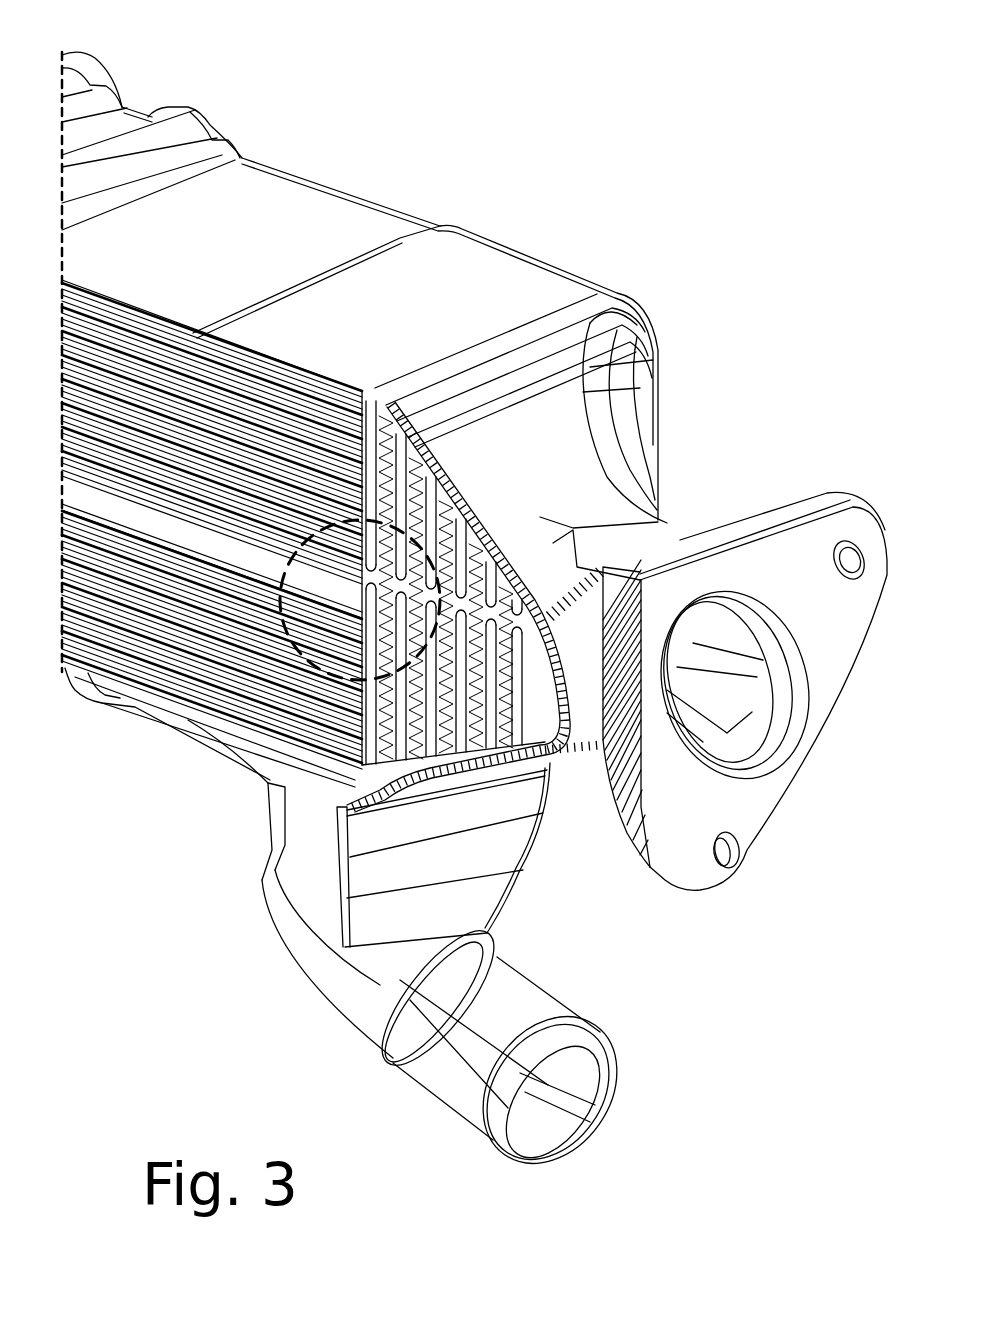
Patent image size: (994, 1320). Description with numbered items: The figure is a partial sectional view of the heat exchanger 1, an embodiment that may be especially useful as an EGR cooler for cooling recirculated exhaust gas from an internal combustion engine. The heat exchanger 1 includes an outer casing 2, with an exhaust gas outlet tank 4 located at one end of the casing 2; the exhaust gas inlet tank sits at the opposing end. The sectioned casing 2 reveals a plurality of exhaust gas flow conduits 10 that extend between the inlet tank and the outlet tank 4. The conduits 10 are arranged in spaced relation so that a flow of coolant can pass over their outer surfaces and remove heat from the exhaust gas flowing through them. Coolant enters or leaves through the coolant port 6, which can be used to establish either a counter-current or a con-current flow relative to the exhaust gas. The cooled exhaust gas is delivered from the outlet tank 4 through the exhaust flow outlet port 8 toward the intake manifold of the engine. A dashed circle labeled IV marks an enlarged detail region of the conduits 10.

The heat exchanger 1 is at (348, 83).
The outer casing 2 is at (310, 227).
The exhaust gas outlet tank 4 is at (577, 468).
The coolant port 6 is at (567, 1122).
The exhaust flow exit or outlet port 8 is at (723, 690).
The exhaust gas flow conduits 10 is at (398, 800).
The detail view IV is at (298, 646).